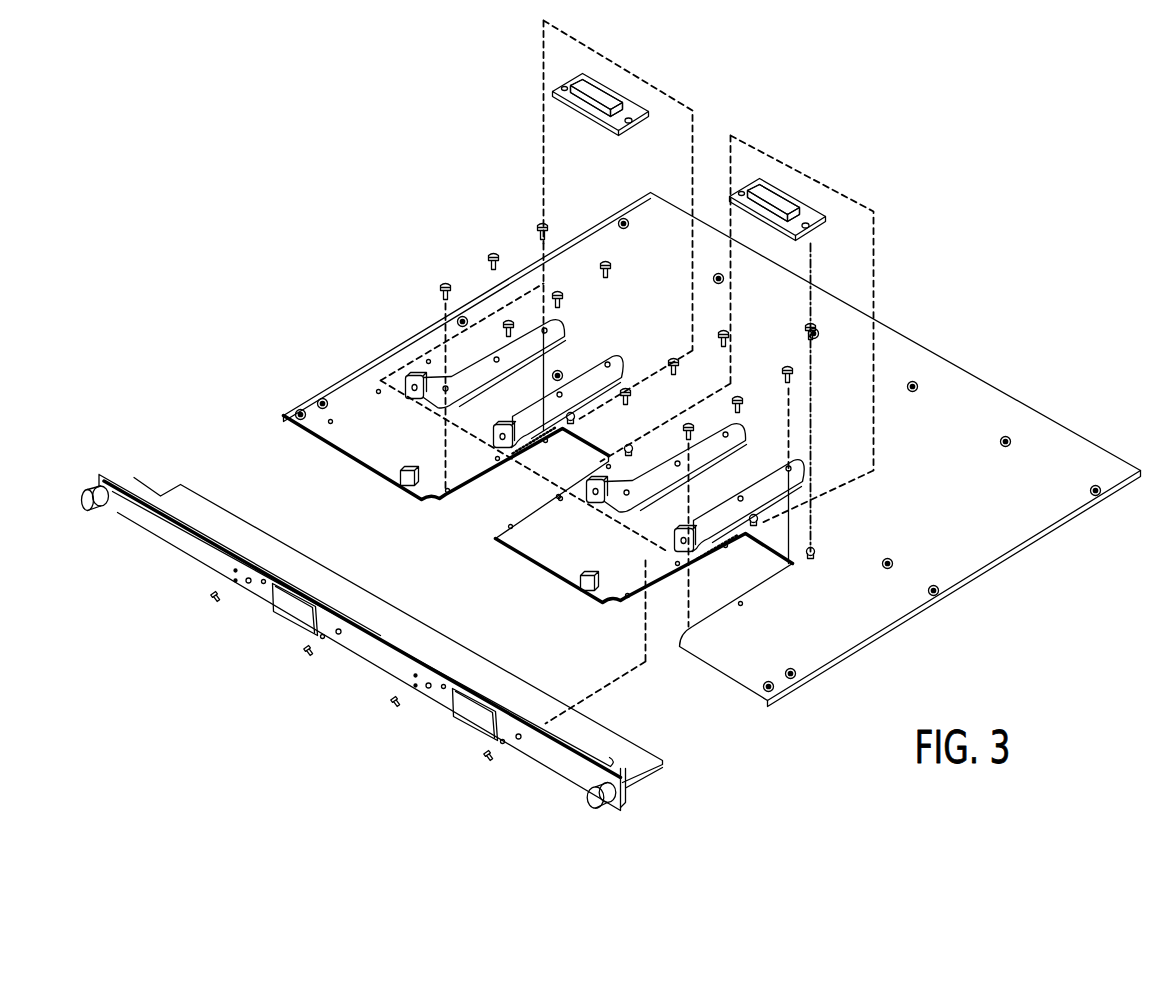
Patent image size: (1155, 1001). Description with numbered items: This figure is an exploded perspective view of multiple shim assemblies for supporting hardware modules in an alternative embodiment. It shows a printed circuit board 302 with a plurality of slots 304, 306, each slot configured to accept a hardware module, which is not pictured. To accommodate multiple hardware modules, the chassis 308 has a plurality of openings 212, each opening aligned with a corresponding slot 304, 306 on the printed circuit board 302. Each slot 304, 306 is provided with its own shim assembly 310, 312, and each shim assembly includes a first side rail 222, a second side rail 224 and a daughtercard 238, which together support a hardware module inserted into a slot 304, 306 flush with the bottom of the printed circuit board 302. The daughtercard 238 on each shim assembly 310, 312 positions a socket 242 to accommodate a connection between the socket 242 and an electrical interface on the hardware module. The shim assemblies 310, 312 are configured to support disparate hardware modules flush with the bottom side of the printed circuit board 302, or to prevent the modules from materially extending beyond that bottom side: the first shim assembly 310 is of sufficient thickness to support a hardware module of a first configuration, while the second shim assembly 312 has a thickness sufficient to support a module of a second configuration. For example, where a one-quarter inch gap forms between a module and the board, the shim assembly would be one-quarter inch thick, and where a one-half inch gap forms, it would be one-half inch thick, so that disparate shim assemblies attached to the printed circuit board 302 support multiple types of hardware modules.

The opening 212 is at (287, 607).
The first side rail 222 is at (592, 370).
The second side rail 224 is at (487, 370).
The daughtercard 238 is at (592, 112).
The socket 242 is at (600, 93).
The printed circuit board 302 is at (990, 413).
The slot 304 is at (663, 640).
The slot 306 is at (477, 510).
The chassis 308 is at (648, 760).
The shim assembly 310 is at (847, 193).
The shim assembly 312 is at (663, 87).